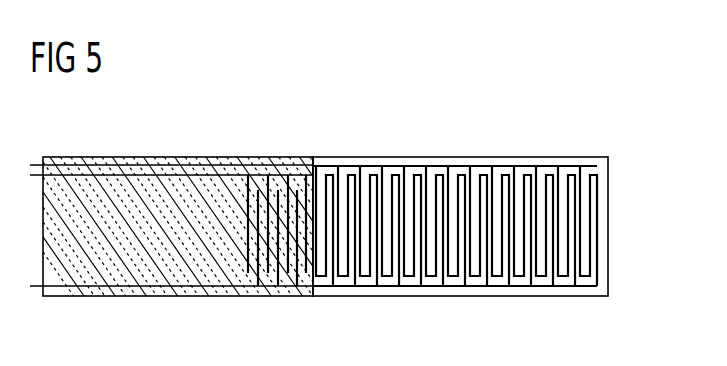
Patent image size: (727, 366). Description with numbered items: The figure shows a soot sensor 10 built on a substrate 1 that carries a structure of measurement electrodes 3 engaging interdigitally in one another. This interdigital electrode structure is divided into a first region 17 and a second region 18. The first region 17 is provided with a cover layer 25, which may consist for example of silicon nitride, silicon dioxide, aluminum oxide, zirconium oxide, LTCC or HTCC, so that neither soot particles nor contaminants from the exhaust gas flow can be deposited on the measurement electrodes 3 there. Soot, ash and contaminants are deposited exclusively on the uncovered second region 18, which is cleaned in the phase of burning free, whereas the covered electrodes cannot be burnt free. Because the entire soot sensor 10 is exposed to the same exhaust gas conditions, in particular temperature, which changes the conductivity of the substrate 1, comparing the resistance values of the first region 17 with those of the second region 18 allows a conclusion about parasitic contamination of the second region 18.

The soot sensor 10 is at (478, 118).
The substrate 1 is at (566, 157).
The measurement electrodes 3 is at (411, 179).
The second region 18 is at (460, 285).
The cover layer 25 is at (221, 181).
The first region 17 is at (268, 283).